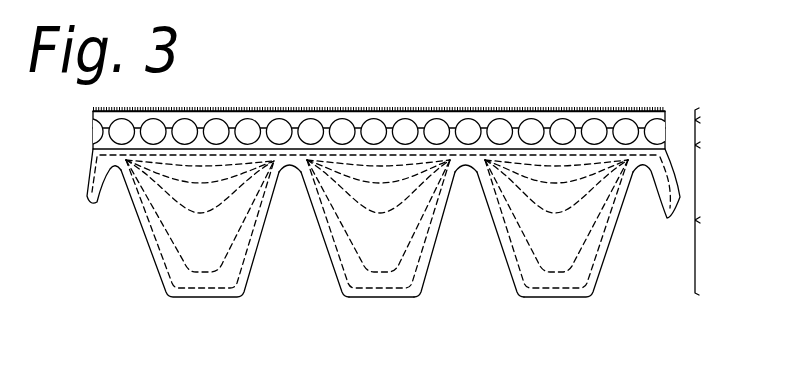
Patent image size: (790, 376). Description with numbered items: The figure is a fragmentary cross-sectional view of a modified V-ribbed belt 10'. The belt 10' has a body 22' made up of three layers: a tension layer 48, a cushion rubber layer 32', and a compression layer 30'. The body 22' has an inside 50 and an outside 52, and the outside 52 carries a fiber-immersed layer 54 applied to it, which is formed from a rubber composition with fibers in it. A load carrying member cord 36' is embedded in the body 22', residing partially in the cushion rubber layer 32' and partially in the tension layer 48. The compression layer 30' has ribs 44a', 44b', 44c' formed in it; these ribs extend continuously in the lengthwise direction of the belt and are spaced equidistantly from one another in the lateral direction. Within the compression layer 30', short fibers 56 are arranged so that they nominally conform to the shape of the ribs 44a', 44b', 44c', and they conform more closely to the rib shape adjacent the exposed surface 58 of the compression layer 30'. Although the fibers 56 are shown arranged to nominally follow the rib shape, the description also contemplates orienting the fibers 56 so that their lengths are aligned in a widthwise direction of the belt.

The V-ribbed belt 10' is at (403, 190).
The body 22' is at (312, 249).
The compression layer 30' is at (408, 257).
The cushion rubber layer 32' is at (403, 84).
The load carrying member cord 36' is at (373, 82).
The rib 44a' is at (200, 259).
The rib 44b' is at (365, 263).
The rib 44c' is at (571, 261).
The tension layer 48 is at (409, 83).
The inside 50 is at (368, 298).
The outside 52 is at (502, 108).
The fiber-immersed layer 54 is at (428, 108).
The short fibers 56 is at (583, 252).
The exposed surface 58 is at (508, 272).